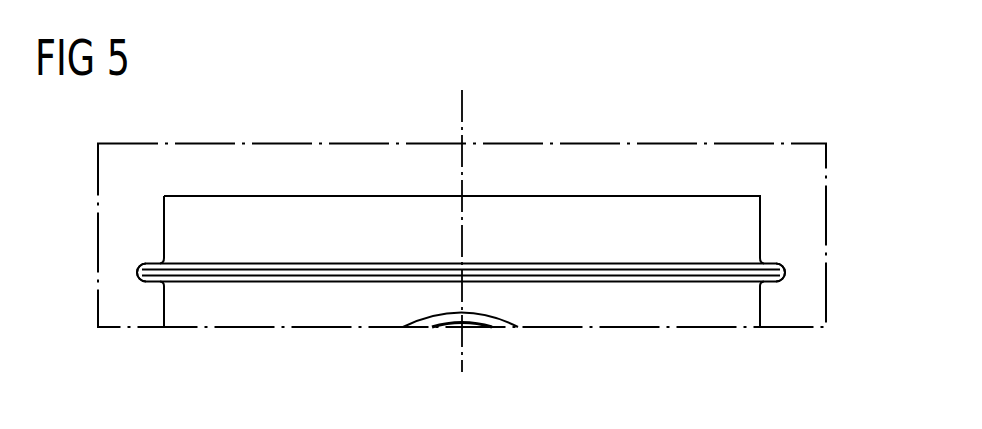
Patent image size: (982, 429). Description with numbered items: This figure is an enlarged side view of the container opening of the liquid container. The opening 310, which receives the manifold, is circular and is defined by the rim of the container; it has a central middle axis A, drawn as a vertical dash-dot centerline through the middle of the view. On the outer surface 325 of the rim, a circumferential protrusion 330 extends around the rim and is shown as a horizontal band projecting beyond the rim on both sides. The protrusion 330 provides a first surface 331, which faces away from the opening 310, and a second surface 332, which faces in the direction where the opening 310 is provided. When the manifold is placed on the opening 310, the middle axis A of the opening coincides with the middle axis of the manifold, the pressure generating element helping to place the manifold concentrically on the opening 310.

The opening 310 is at (709, 183).
The outer surface 325 is at (164, 222).
The circumferential protrusion 330 is at (785, 272).
The first surface 331 is at (152, 283).
The second surface 332 is at (767, 263).
The central middle axis A is at (462, 343).